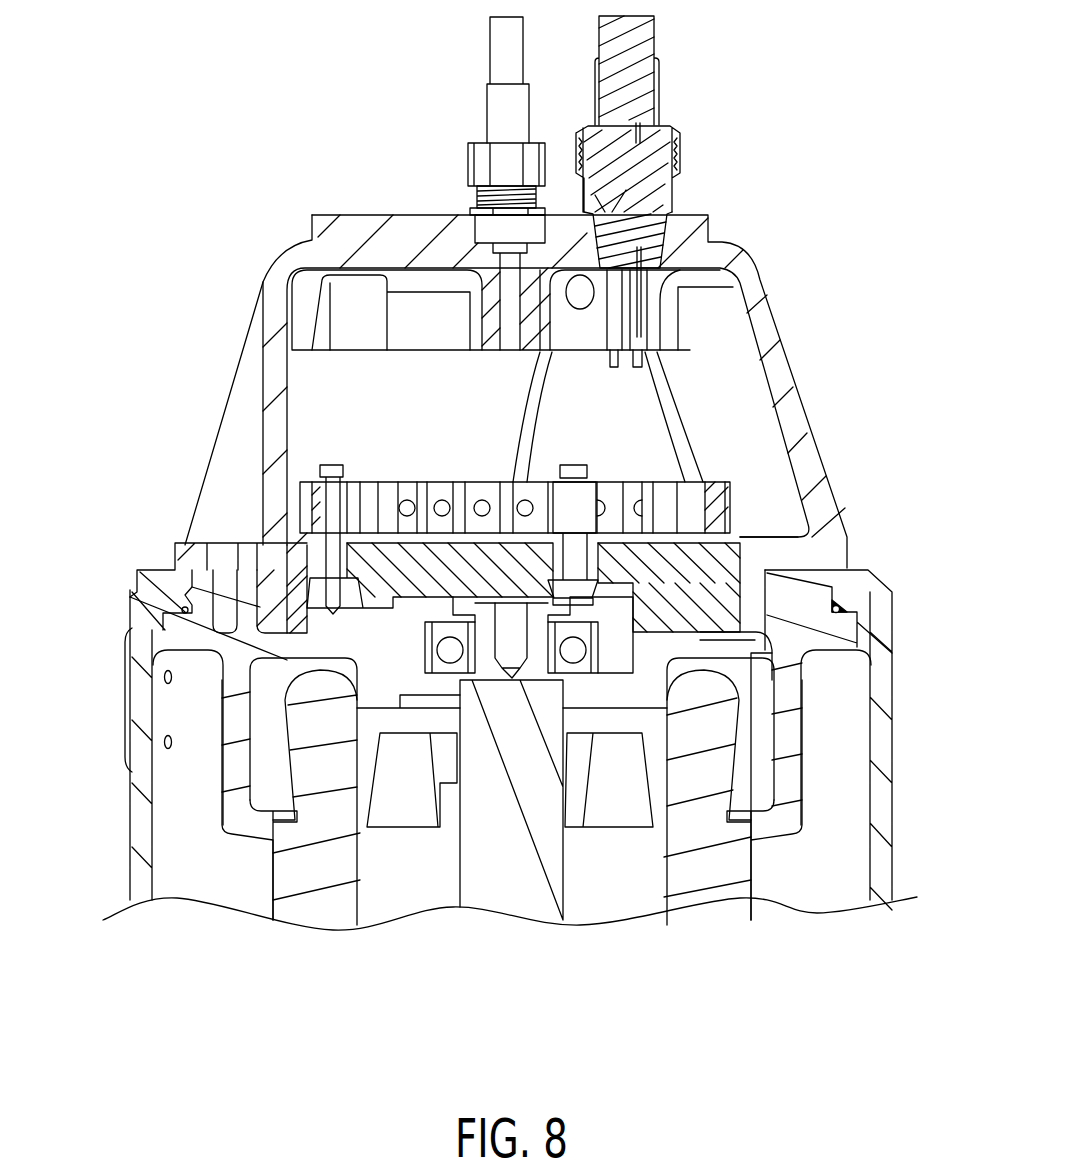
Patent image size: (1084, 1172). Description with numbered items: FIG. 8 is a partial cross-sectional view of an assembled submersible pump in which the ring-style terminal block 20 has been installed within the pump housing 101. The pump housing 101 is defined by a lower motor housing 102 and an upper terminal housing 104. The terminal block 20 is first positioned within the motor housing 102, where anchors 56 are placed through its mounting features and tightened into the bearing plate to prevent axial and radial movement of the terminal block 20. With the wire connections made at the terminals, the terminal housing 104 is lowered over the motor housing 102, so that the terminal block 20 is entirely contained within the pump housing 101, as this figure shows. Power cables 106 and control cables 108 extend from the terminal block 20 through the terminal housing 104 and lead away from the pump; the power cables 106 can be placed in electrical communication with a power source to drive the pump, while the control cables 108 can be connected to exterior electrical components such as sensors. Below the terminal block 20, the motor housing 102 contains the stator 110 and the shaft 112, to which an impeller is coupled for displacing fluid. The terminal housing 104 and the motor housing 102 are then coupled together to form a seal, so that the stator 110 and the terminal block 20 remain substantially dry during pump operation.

The ring-style terminal block 20 is at (712, 466).
The anchor 56 is at (334, 465).
The pump housing 101 is at (165, 494).
The motor housing 102 is at (904, 747).
The terminal housing 104 is at (267, 233).
The power cable 106 is at (684, 113).
The control cable 108 is at (462, 128).
The stator 110 is at (702, 868).
The shaft 112 is at (515, 873).